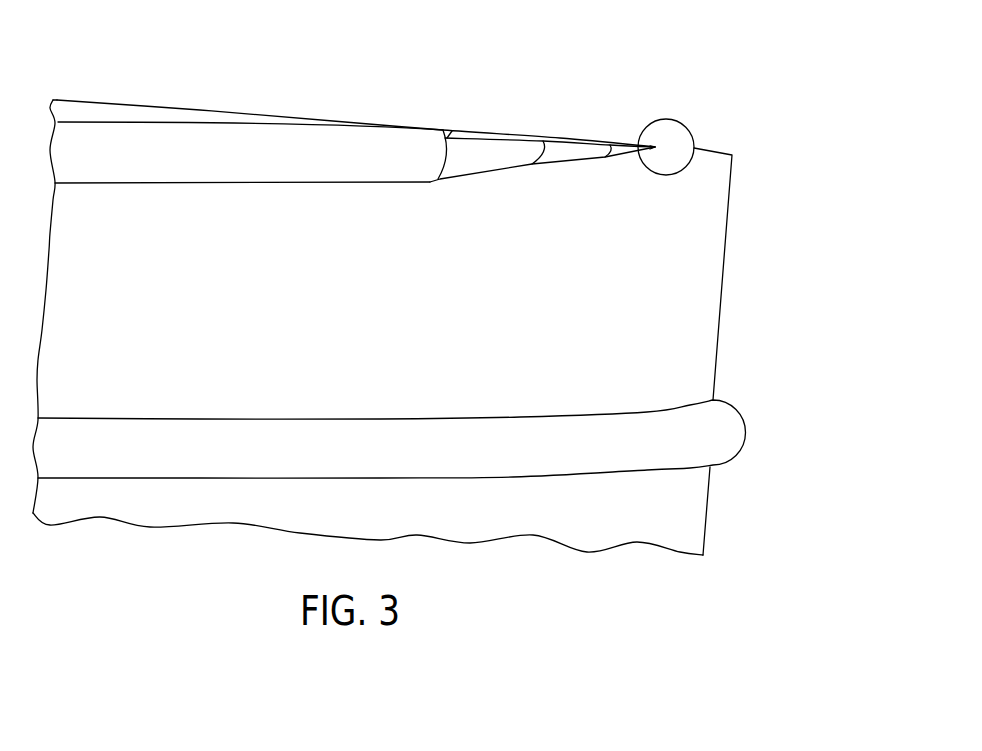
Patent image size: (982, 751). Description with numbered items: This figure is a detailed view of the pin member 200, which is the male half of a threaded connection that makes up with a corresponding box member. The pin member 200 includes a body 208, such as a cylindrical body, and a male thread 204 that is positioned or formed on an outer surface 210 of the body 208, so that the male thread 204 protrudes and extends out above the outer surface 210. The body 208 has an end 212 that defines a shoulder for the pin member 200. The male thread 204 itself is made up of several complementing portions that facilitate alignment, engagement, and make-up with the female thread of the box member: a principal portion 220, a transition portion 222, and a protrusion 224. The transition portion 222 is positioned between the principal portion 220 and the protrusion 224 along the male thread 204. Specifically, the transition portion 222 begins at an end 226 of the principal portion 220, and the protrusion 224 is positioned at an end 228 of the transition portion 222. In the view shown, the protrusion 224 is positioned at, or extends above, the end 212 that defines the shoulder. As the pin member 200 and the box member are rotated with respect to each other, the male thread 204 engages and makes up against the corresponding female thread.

The pin member 200 is at (752, 231).
The male thread 204 is at (110, 133).
The body 208 is at (172, 314).
The outer surface 210 is at (720, 335).
The end 212 is at (257, 110).
The principal portion 220 is at (357, 142).
The transition portion 222 is at (557, 137).
The protrusion 224 is at (683, 127).
The end of the principal portion 226 is at (453, 128).
The end of the transition portion 228 is at (655, 147).